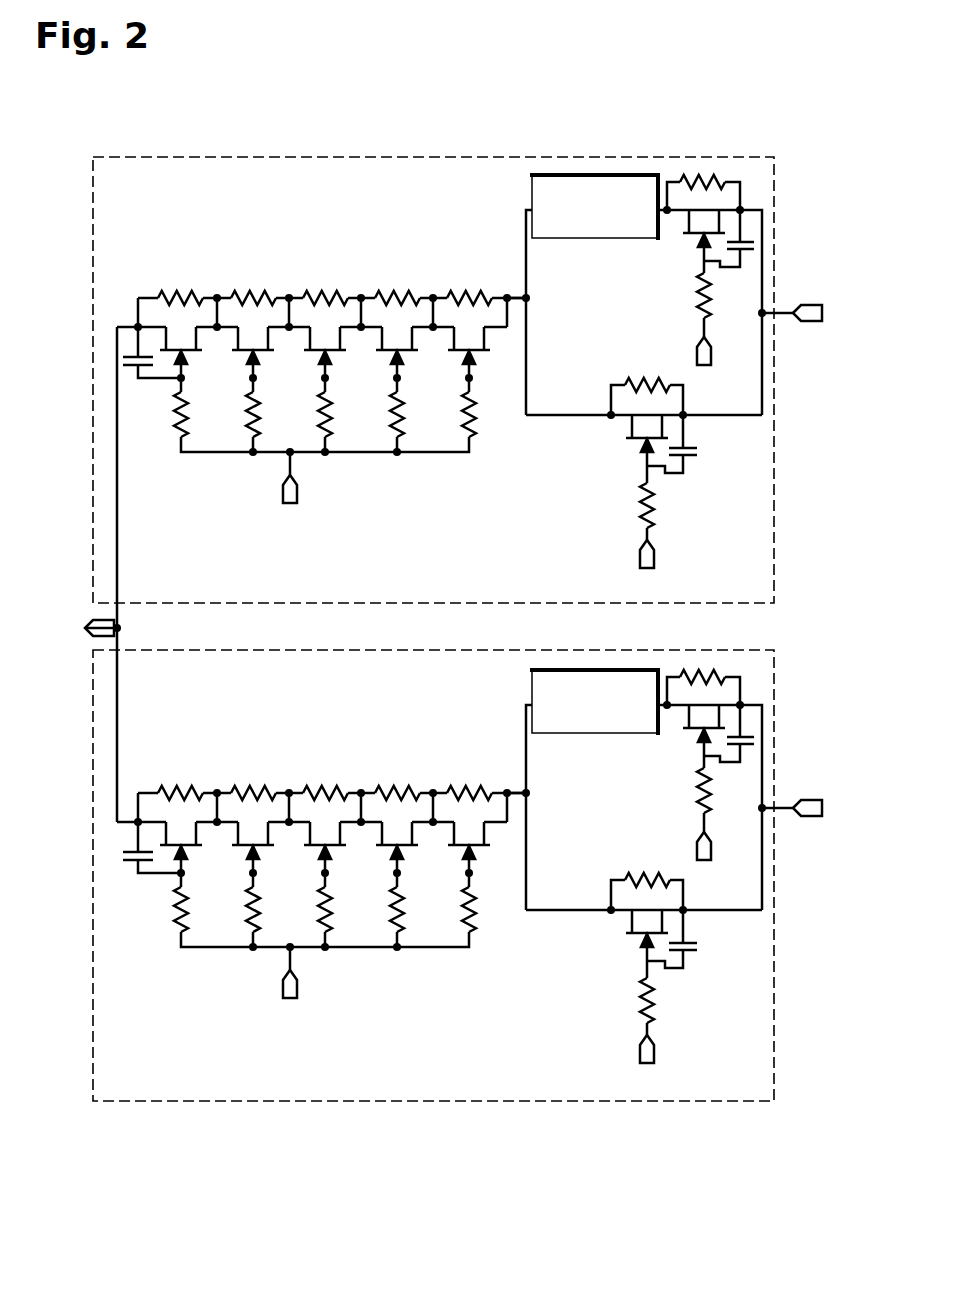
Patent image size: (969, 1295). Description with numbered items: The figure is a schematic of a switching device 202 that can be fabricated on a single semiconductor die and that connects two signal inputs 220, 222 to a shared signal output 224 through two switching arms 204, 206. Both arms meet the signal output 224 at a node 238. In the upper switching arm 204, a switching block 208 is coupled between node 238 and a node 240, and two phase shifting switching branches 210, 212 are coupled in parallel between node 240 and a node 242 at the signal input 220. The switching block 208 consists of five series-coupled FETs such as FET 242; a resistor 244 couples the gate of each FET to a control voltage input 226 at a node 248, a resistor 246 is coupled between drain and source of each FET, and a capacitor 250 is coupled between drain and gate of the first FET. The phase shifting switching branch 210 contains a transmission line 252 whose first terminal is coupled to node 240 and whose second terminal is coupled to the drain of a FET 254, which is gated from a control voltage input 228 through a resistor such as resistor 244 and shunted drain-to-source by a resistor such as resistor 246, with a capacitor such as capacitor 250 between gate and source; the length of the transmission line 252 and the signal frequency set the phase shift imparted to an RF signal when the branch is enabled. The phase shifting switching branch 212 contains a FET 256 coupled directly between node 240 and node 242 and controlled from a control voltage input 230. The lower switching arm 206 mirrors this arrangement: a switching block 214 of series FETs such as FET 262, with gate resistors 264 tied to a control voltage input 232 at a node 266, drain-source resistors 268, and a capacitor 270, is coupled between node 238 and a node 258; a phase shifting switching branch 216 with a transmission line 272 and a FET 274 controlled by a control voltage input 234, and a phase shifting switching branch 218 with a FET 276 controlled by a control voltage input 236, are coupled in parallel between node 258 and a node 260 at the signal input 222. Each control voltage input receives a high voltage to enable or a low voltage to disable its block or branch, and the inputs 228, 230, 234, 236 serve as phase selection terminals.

The switching device 202 is at (762, 113).
The switching arm 204 is at (322, 157).
The switching arm 206 is at (470, 902).
The switching block 208 is at (206, 250).
The phase shifting switching branch 210 is at (505, 207).
The phase shifting switching branch 212 is at (575, 492).
The switching block 214 is at (321, 831).
The phase shifting switching branch 216 is at (637, 787).
The phase shifting switching branch 218 is at (633, 968).
The signal input 220 is at (804, 305).
The signal input 222 is at (805, 782).
The signal output 224 is at (72, 620).
The control voltage input 226 is at (300, 492).
The control voltage input 228 is at (697, 350).
The control voltage input 230 is at (660, 552).
The control voltage input 232 is at (325, 972).
The control voltage input 234 is at (673, 845).
The control voltage input 236 is at (681, 1049).
The node 238 is at (121, 628).
The node 240 is at (530, 299).
The FET 242 is at (203, 342).
The resistor 244 is at (180, 426).
The resistor 246 is at (172, 298).
The node 248 is at (253, 456).
The capacitor 250 is at (130, 370).
The transmission line 252 is at (568, 238).
The FET 254 is at (688, 218).
The FET 256 is at (630, 421).
The node 258 is at (560, 800).
The node 260 is at (697, 303).
The FET 262 is at (325, 849).
The resistor 264 is at (325, 909).
The node 266 is at (292, 924).
The resistor 268 is at (325, 771).
The capacitor 270 is at (152, 869).
The transmission line 272 is at (595, 721).
The FET 274 is at (703, 751).
The FET 276 is at (646, 954).